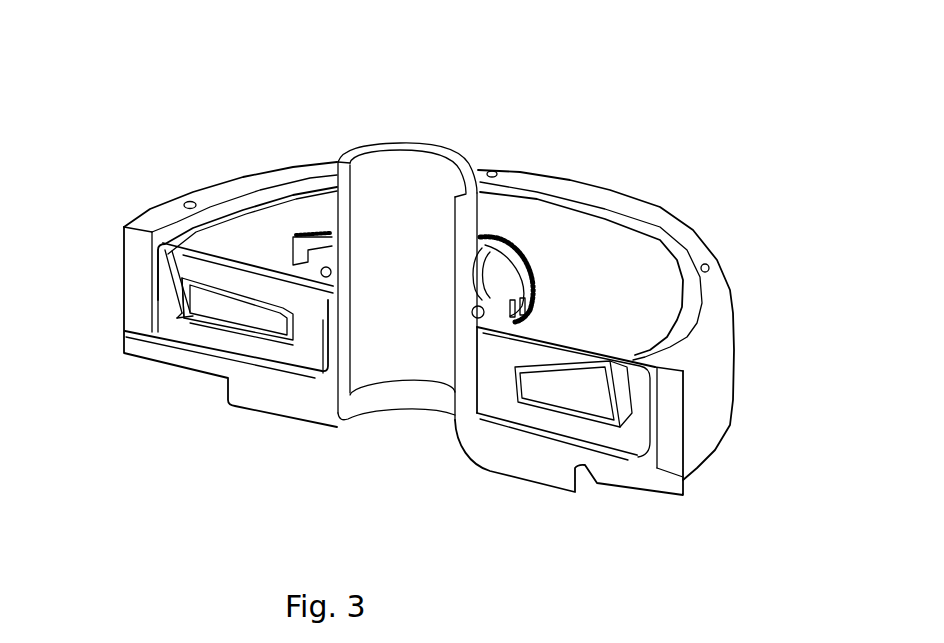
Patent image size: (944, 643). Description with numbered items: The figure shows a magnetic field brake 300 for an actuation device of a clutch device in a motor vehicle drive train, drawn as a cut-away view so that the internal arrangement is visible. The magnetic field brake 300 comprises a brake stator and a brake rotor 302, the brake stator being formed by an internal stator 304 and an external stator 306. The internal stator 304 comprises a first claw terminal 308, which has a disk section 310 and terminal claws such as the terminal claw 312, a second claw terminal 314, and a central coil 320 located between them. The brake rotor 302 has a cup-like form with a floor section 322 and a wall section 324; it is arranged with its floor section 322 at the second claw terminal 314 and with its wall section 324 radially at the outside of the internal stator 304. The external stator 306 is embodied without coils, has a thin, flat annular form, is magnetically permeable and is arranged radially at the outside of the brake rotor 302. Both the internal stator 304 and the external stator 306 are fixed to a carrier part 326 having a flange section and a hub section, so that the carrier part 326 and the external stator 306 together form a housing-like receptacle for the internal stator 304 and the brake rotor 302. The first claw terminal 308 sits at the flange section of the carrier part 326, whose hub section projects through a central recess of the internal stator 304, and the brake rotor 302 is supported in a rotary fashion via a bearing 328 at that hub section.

The magnetic field brake 300 is at (233, 152).
The brake rotor 302 is at (622, 288).
The internal stator 304 is at (503, 400).
The external stator 306 is at (670, 427).
The first claw terminal 308 is at (181, 334).
The disk section 310 is at (255, 350).
The terminal claw 312 is at (166, 296).
The second claw terminal 314 is at (305, 313).
The central coil 320 is at (222, 313).
The floor section 322 is at (641, 357).
The wall section 324 is at (653, 398).
The carrier part 326 is at (423, 173).
The bearing 328 is at (497, 243).